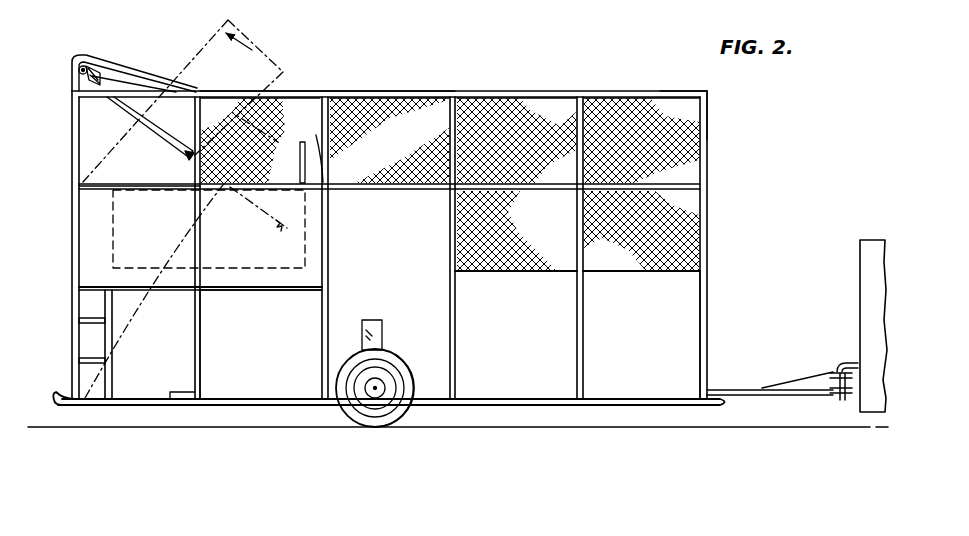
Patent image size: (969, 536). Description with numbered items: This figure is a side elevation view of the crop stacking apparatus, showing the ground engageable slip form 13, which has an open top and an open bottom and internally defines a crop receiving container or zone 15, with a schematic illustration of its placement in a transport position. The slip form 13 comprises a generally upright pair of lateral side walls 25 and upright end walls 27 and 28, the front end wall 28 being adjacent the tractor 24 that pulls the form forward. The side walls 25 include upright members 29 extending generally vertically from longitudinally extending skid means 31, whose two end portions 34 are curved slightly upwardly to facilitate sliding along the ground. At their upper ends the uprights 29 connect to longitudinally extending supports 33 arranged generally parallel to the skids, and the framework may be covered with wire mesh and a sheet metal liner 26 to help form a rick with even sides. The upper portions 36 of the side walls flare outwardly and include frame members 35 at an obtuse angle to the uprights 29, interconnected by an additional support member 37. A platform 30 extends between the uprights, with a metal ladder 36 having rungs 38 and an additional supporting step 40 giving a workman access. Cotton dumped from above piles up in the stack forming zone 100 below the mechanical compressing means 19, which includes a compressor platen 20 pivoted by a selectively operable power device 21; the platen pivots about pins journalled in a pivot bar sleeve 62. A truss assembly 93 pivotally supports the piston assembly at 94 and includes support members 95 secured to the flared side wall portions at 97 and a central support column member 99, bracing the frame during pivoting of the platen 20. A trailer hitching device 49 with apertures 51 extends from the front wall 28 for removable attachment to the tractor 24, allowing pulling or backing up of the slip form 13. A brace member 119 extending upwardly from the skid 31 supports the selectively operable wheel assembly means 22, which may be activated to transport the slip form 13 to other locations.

The slip form 13 is at (722, 158).
The crop receiving container or zone 15 is at (405, 89).
The mechanical compressing means 19 is at (268, 34).
The compressor platen 20 is at (273, 60).
The selectively operable power device 21 is at (110, 83).
The selectively operable wheel assembly means 22 is at (406, 425).
The tractor 24 is at (872, 406).
The lateral side walls 25 is at (265, 372).
The sheet metal liner 26 is at (303, 331).
The end wall 27 is at (73, 309).
The end wall 28 is at (709, 313).
The upright members 29 is at (196, 401).
The platform 30 is at (97, 288).
The skid means 31 is at (497, 402).
The longitudinally extending supports 33 is at (672, 187).
The end portions of skids 34 is at (65, 398).
The frame members 35 is at (283, 103).
The upper portions of side walls 36 is at (619, 114).
The additional support member 37 is at (680, 94).
The rungs 38 is at (100, 319).
The supporting step 40 is at (184, 393).
The trailer hitching device 49 is at (793, 398).
The apertures 51 is at (836, 360).
The pivot bar sleeve 62 is at (75, 183).
The truss assembly 93 is at (124, 33).
The pivotal support of piston assembly 94 is at (80, 71).
The support members 95 is at (147, 77).
The securing location on flared side wall portions 97 is at (199, 87).
The central support column member 99 is at (82, 78).
The stack forming zone 100 is at (288, 176).
The brace member 119 is at (383, 334).